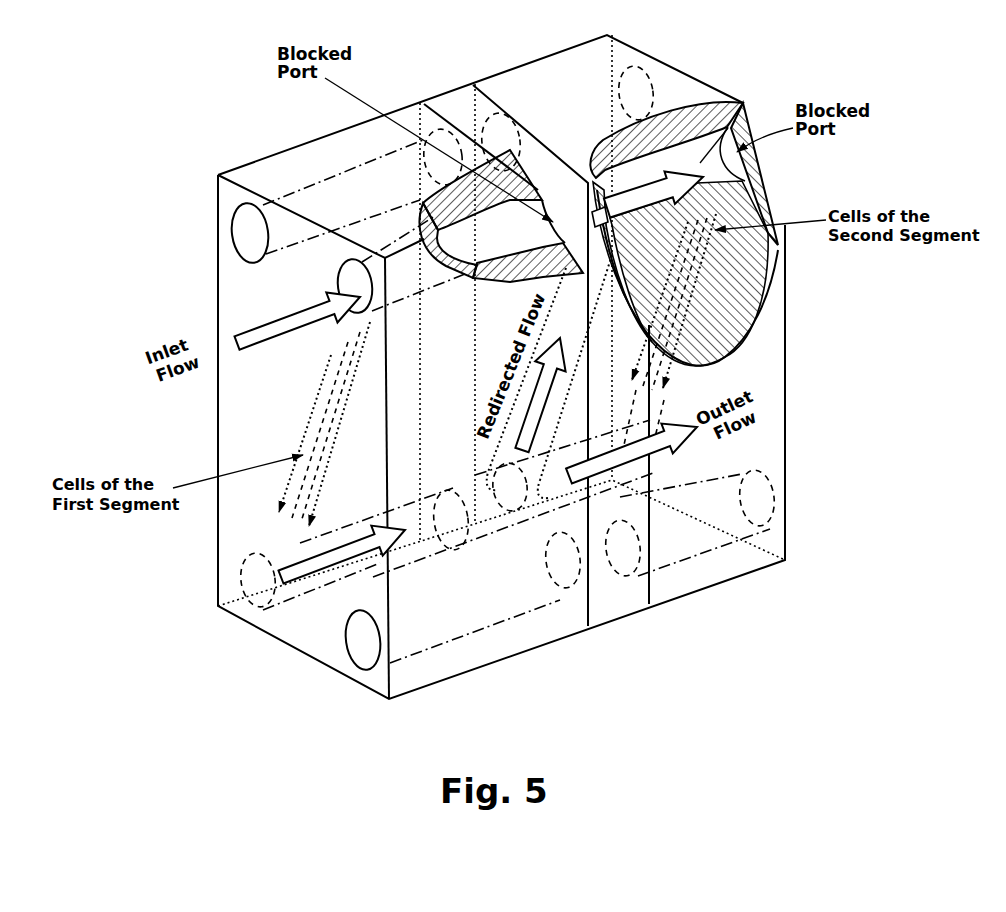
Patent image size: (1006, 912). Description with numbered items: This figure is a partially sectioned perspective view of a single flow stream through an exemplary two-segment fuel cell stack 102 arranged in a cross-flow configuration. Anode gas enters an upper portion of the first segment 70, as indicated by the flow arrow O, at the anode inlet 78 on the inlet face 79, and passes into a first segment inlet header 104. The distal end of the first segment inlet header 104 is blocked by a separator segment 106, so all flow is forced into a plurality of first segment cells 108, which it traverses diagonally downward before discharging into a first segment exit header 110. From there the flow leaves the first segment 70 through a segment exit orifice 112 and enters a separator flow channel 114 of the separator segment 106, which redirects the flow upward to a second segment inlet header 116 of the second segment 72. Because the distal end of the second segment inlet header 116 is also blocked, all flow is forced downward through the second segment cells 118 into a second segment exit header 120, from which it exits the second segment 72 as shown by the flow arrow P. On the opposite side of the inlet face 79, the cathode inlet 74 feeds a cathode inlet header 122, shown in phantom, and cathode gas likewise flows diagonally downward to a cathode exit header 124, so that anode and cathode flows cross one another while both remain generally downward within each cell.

The first segment 70 is at (258, 177).
The second segment 72 is at (553, 80).
The cathode inlet 74 is at (237, 230).
The anode inlet 78 is at (338, 277).
The inlet face 79 is at (240, 530).
The monolith block 102 is at (225, 148).
The first segment inlet header 104 is at (483, 230).
The separator segment 106 is at (462, 115).
The first segment cells 108 is at (307, 415).
The first segment exit header 110 is at (313, 597).
The segment exit orifice 112 is at (470, 558).
The separator flow channel 114 is at (505, 450).
The second segment inlet header 116 is at (744, 102).
The second segment cells 118 is at (786, 280).
The second segment exit header 120 is at (657, 465).
The cathode inlet header 122 is at (370, 158).
The cathode exit header 124 is at (460, 640).
The flow arrow O is at (265, 323).
The flow arrow P is at (660, 424).